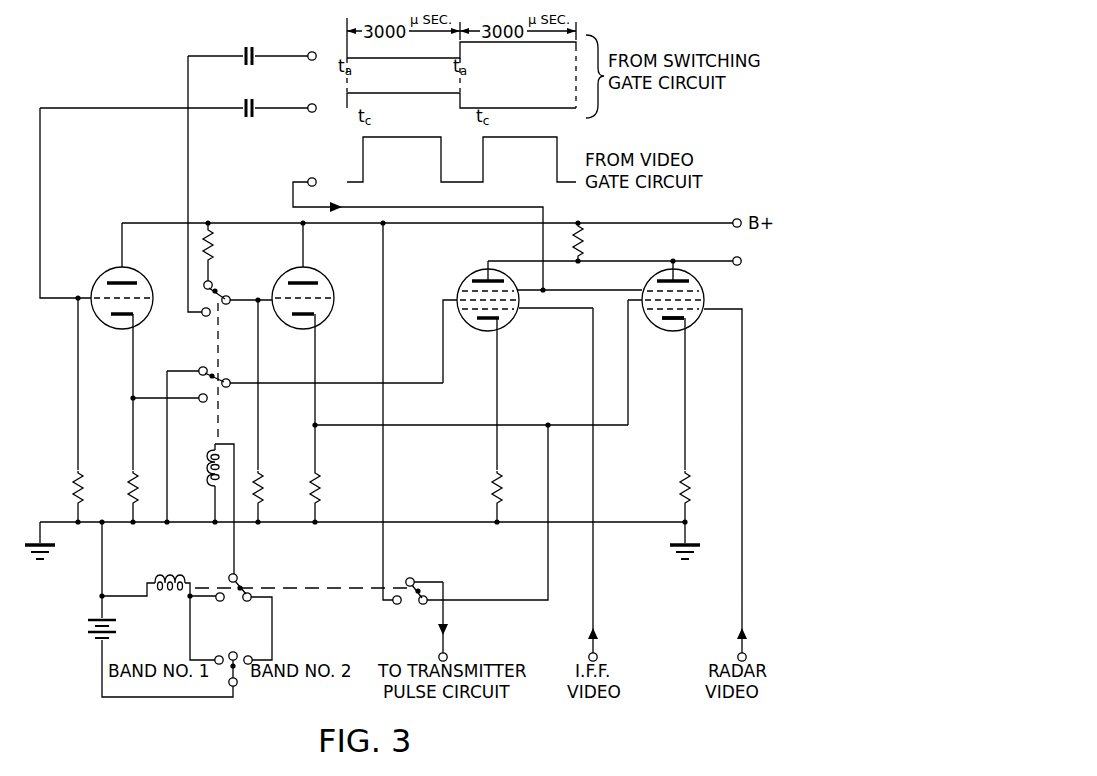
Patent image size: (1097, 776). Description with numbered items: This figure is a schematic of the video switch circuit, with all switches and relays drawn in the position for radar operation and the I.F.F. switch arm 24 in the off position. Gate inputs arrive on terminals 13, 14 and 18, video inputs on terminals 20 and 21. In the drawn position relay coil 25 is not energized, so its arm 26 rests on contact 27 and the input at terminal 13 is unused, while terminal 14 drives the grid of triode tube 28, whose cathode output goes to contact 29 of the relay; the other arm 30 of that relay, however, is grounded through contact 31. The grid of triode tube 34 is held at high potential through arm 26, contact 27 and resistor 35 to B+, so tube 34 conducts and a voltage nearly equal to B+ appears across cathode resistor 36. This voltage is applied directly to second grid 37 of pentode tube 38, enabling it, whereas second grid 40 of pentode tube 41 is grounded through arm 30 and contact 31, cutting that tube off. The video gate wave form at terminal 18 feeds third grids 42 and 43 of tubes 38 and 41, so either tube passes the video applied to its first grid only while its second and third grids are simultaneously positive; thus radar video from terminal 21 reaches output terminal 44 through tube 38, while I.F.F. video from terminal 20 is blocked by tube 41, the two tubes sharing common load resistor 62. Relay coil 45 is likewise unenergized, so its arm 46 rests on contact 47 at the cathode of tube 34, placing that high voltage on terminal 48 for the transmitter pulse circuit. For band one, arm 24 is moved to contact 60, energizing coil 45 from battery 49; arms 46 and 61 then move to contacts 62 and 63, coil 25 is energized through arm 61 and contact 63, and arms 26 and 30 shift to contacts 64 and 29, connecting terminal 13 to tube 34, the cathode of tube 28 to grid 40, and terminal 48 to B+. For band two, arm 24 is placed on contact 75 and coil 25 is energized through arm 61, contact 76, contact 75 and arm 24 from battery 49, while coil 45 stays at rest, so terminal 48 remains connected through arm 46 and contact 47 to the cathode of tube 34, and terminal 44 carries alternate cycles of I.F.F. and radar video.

The terminal 13 is at (312, 53).
The terminal 14 is at (312, 106).
The terminal 18 is at (312, 181).
The terminal 20 is at (597, 654).
The terminal 21 is at (746, 654).
The I.F.F. switch arm 24 is at (238, 686).
The relay coil 25 is at (209, 464).
The arm 26 is at (228, 294).
The contact 27 is at (212, 284).
The triode tube 28 is at (145, 280).
The contact 29 is at (206, 400).
The arm 30 is at (220, 380).
The contact 31 is at (202, 368).
The triode tube 34 is at (326, 280).
The resistor 35 is at (214, 245).
The cathode resistor 36 is at (321, 483).
The second grid 37 is at (684, 298).
The pentode tube 38 is at (686, 322).
The second grid 40 is at (469, 297).
The pentode tube 41 is at (486, 279).
The third grid 42 is at (658, 293).
The third grid 43 is at (540, 276).
The terminal 44 is at (740, 258).
The relay coil 45 is at (161, 583).
The arm 46 is at (413, 581).
The contact 47 is at (426, 604).
The terminal 48 is at (447, 654).
The battery 49 is at (88, 634).
The contact 60 is at (220, 656).
The arm 61 is at (242, 581).
The contact / common load resistor 62 is at (584, 243).
The contact 63 is at (222, 601).
The contact 64 is at (204, 316).
The contact 75 is at (260, 658).
The contact 76 is at (244, 603).